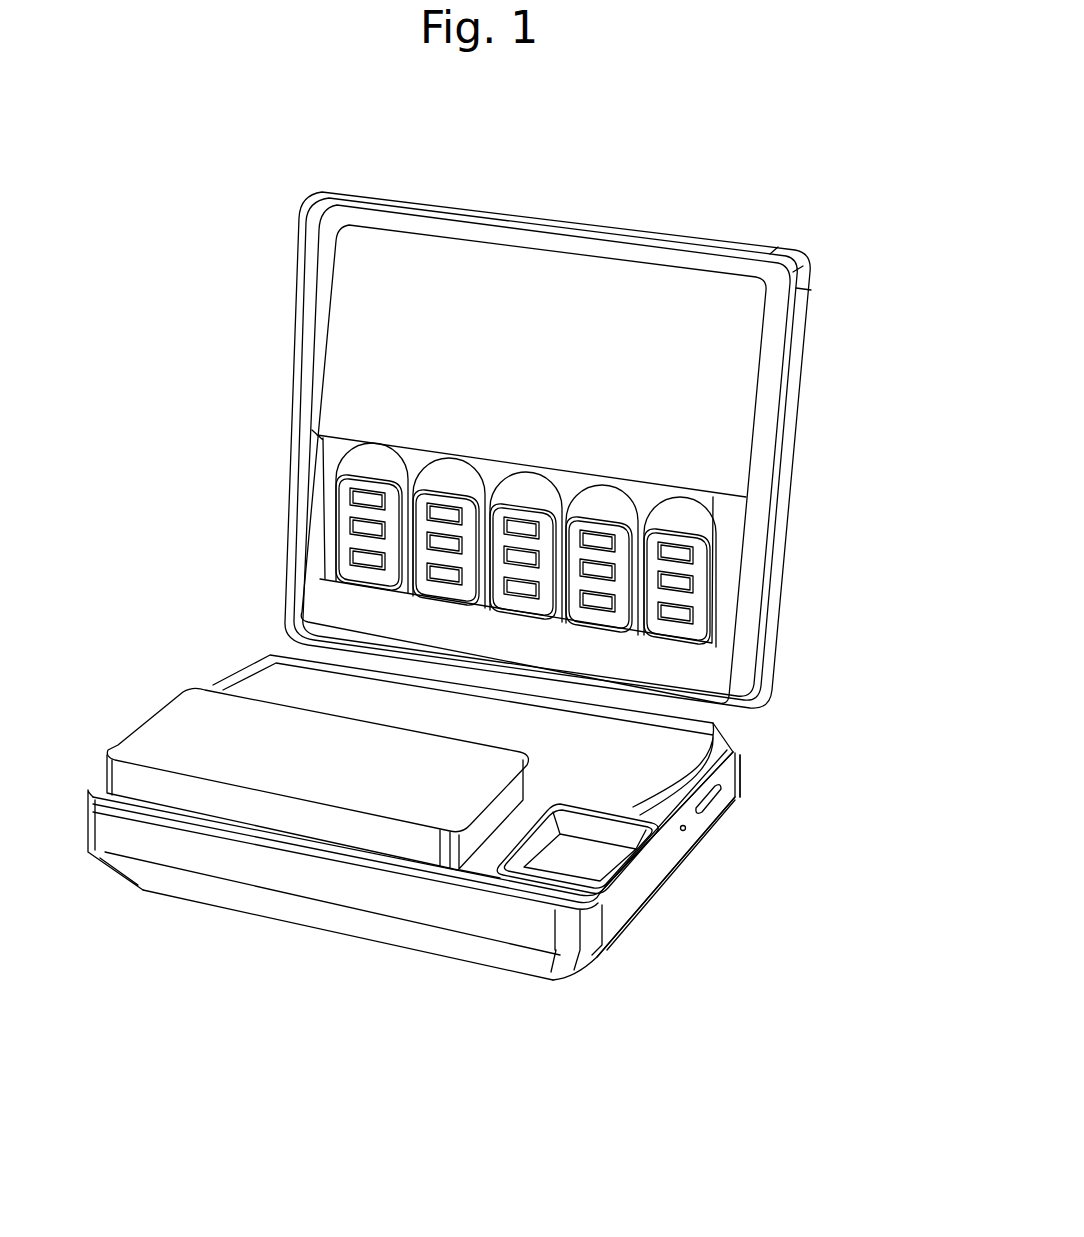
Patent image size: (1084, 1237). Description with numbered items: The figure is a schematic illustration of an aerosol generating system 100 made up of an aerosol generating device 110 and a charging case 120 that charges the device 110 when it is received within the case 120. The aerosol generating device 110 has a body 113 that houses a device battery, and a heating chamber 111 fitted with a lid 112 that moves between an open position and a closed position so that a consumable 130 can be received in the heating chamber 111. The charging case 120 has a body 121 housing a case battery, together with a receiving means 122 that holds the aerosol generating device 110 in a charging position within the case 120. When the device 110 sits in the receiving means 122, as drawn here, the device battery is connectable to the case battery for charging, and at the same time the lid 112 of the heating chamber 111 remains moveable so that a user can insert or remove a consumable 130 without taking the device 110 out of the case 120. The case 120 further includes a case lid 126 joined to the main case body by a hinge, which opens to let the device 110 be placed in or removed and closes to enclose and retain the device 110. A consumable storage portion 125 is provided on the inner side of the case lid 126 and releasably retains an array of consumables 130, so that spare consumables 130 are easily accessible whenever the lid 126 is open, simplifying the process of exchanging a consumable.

The aerosol generating system 100 is at (880, 228).
The aerosol generating device 110 is at (140, 713).
The heating chamber 111 is at (585, 847).
The lid 112 is at (360, 805).
The body 113 is at (485, 870).
The charging case 120 is at (280, 385).
The body 121 is at (675, 845).
The receiving means 122 is at (730, 757).
The consumable storage portion 125 is at (655, 492).
The case lid 126 is at (507, 213).
The consumable 130 is at (705, 516).